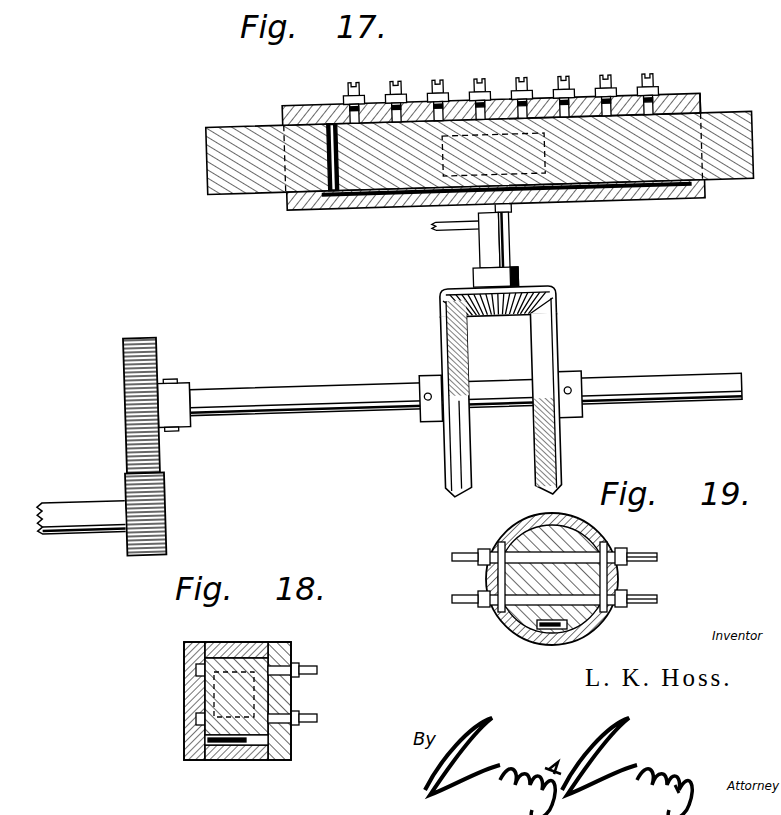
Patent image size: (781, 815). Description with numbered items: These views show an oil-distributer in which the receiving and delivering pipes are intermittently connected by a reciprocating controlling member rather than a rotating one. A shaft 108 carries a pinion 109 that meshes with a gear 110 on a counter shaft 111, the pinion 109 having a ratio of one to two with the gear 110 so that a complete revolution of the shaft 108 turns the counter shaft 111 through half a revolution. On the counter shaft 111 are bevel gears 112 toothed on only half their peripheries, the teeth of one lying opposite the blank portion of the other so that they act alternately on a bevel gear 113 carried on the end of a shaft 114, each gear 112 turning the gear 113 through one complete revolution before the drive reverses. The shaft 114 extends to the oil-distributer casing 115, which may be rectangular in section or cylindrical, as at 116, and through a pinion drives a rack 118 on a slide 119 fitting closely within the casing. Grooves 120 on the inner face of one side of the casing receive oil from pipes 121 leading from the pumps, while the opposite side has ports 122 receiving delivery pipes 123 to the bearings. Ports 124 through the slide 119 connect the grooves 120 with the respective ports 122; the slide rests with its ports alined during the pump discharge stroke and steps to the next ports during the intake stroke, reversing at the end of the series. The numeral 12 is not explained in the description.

In FIG. 18, the bolt 12 is at (310, 722).
In FIG. 17, the shaft 108 is at (56, 498).
In FIG. 17, the pinion 109 is at (138, 503).
In FIG. 17, the gear 110 is at (122, 390).
In FIG. 17, the counter shaft 111 is at (289, 381).
In FIG. 17, the bevel gears 112 is at (458, 445).
In FIG. 17, the bevel gear 113 is at (541, 294).
In FIG. 17, the shaft 114 is at (513, 256).
In FIG. 17, the oil-distributer casing 115 is at (697, 99).
In FIG. 18, the oil-distributer casing 115 is at (292, 643).
In FIG. 19, the cylindrical casing 116 is at (500, 628).
In FIG. 18, the rack 118 is at (238, 760).
In FIG. 19, the rack 118 is at (548, 630).
In FIG. 17, the slide 119 is at (243, 188).
In FIG. 18, the slide 119 is at (292, 695).
In FIG. 19, the slide 119 is at (538, 538).
In FIG. 17, the grooves 120 is at (658, 205).
In FIG. 18, the grooves 120 is at (178, 683).
In FIG. 19, the grooves 120 is at (501, 563).
In FIG. 17, the pipes 121 is at (452, 232).
In FIG. 19, the pipes 121 is at (453, 568).
In FIG. 17, the ports 122 is at (361, 110).
In FIG. 18, the ports 122 is at (280, 643).
In FIG. 19, the ports 122 is at (605, 553).
In FIG. 17, the delivery pipes 123 is at (526, 84).
In FIG. 18, the delivery pipes 123 is at (318, 667).
In FIG. 19, the delivery pipes 123 is at (660, 597).
In FIG. 17, the ports 124 is at (318, 205).
In FIG. 19, the ports 124 is at (557, 560).